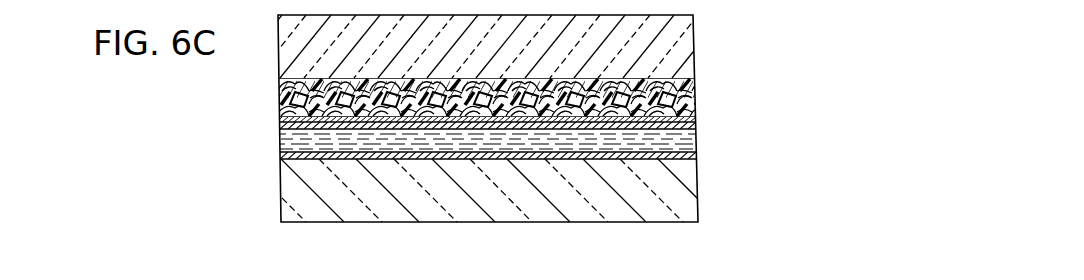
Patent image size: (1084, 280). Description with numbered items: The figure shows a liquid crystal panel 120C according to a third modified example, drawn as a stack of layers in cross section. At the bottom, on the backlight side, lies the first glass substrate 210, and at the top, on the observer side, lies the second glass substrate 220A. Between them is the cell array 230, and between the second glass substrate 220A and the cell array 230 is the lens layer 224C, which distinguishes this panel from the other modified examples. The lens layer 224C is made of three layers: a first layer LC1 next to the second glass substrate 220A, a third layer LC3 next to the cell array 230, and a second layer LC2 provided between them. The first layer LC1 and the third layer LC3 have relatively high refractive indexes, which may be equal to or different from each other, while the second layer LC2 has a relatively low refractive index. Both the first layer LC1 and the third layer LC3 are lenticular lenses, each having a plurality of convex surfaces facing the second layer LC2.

The liquid crystal panel 120C is at (532, 120).
The second glass substrate 220A is at (693, 20).
The lens layer 224C is at (557, 80).
The first layer LC1 is at (693, 80).
The second layer LC2 is at (693, 96).
The third layer LC3 is at (693, 115).
The cell array 230 is at (715, 115).
The first glass substrate 210 is at (683, 209).